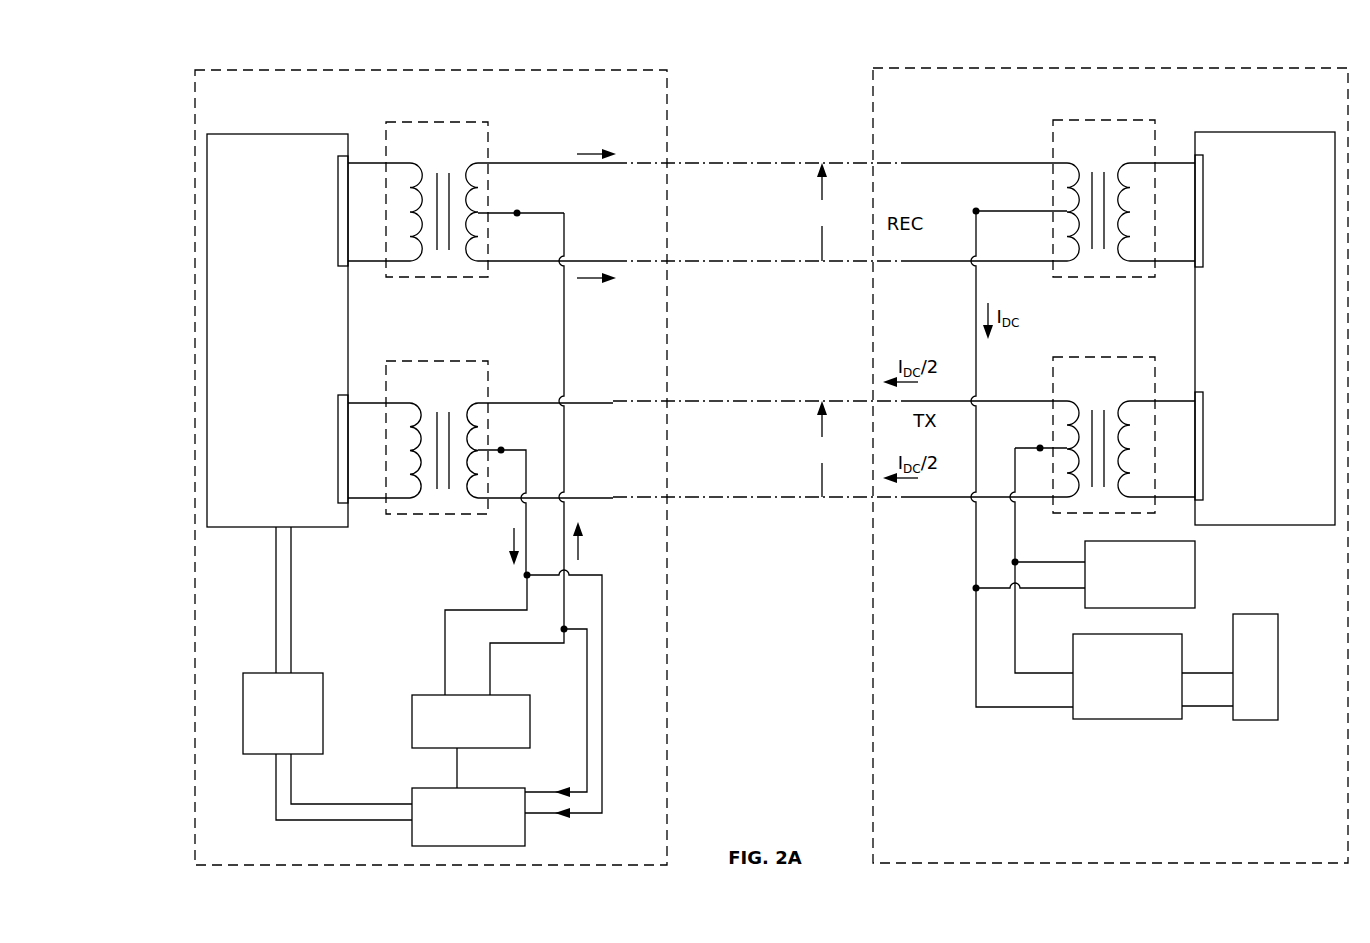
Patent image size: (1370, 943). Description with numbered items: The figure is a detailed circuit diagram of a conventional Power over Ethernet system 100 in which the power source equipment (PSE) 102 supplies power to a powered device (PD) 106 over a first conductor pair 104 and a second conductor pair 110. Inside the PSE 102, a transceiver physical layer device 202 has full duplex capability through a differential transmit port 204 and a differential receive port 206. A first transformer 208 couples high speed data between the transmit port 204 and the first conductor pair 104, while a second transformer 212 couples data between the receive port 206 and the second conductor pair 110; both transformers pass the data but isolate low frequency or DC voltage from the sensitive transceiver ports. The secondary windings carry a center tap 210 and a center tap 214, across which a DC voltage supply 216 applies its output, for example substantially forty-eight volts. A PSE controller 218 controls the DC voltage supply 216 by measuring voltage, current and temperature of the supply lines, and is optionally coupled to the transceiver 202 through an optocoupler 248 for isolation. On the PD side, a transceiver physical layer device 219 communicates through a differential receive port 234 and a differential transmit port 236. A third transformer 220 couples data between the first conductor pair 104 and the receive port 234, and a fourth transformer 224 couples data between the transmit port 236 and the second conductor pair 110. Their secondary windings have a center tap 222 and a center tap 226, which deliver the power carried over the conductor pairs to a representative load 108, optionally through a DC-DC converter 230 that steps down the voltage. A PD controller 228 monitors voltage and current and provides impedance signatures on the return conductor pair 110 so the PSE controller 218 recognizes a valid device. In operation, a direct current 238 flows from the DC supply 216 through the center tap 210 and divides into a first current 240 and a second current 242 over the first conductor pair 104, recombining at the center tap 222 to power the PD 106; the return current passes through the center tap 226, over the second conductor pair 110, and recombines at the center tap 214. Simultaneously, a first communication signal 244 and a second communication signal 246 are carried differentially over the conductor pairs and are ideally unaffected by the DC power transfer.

The PoE system 100 is at (750, 112).
The power source equipment (PSE) 102 is at (413, 70).
The first conductor pair 104 is at (730, 228).
The powered device (PD) 106 is at (1128, 68).
The load 108 is at (1278, 648).
The second conductor pair 110 is at (730, 465).
The transceiver physical layer device 202 is at (277, 330).
The differential transmit port 204 is at (338, 215).
The differential receive port 206 is at (338, 440).
The first transformer 208 is at (418, 199).
The center tap 210 is at (519, 212).
The second transformer 212 is at (484, 437).
The center tap 214 is at (503, 449).
The DC voltage supply 216 is at (412, 718).
The PSE controller 218 is at (425, 788).
The transceiver physical layer device 219 is at (1265, 328).
The third transformer 220 is at (1055, 198).
The center tap 222 is at (974, 211).
The fourth transformer 224 is at (1055, 435).
The center tap 226 is at (1038, 448).
The PD controller 228 is at (1195, 568).
The DC-DC converter 230 is at (1105, 722).
The differential receive port 234 is at (1203, 205).
The differential transmit port 236 is at (1203, 430).
The direct current 238 is at (606, 540).
The first current 240 is at (580, 135).
The second current 242 is at (600, 318).
The first communication signal 244 is at (822, 212).
The second communication signal 246 is at (822, 449).
The optocoupler 248 is at (305, 672).